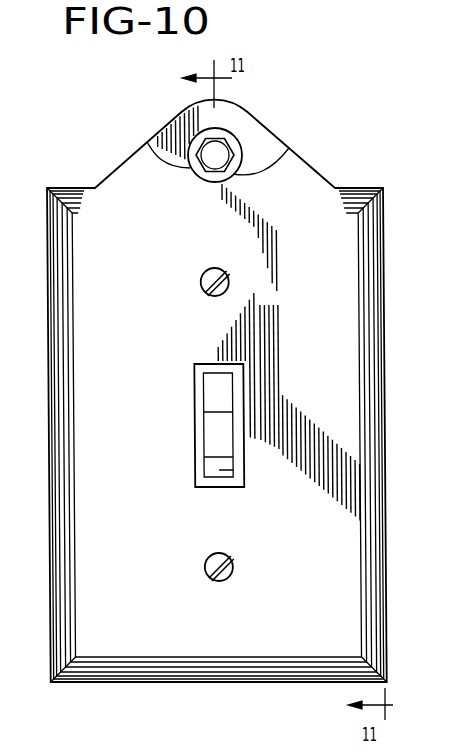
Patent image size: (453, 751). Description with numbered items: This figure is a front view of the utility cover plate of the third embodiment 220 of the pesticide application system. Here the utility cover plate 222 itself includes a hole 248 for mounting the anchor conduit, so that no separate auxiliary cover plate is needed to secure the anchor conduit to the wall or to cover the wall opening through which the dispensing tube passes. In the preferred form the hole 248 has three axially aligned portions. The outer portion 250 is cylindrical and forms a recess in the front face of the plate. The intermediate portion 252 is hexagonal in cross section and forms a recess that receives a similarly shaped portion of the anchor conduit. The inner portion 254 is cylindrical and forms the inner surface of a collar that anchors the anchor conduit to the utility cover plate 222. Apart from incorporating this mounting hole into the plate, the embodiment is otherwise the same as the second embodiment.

The third embodiment 220 is at (112, 117).
The utility cover plate 222 is at (134, 504).
The hole 248 is at (238, 124).
The outer portion 250 is at (292, 149).
The intermediate portion 252 is at (205, 131).
The inner portion 254 is at (147, 142).